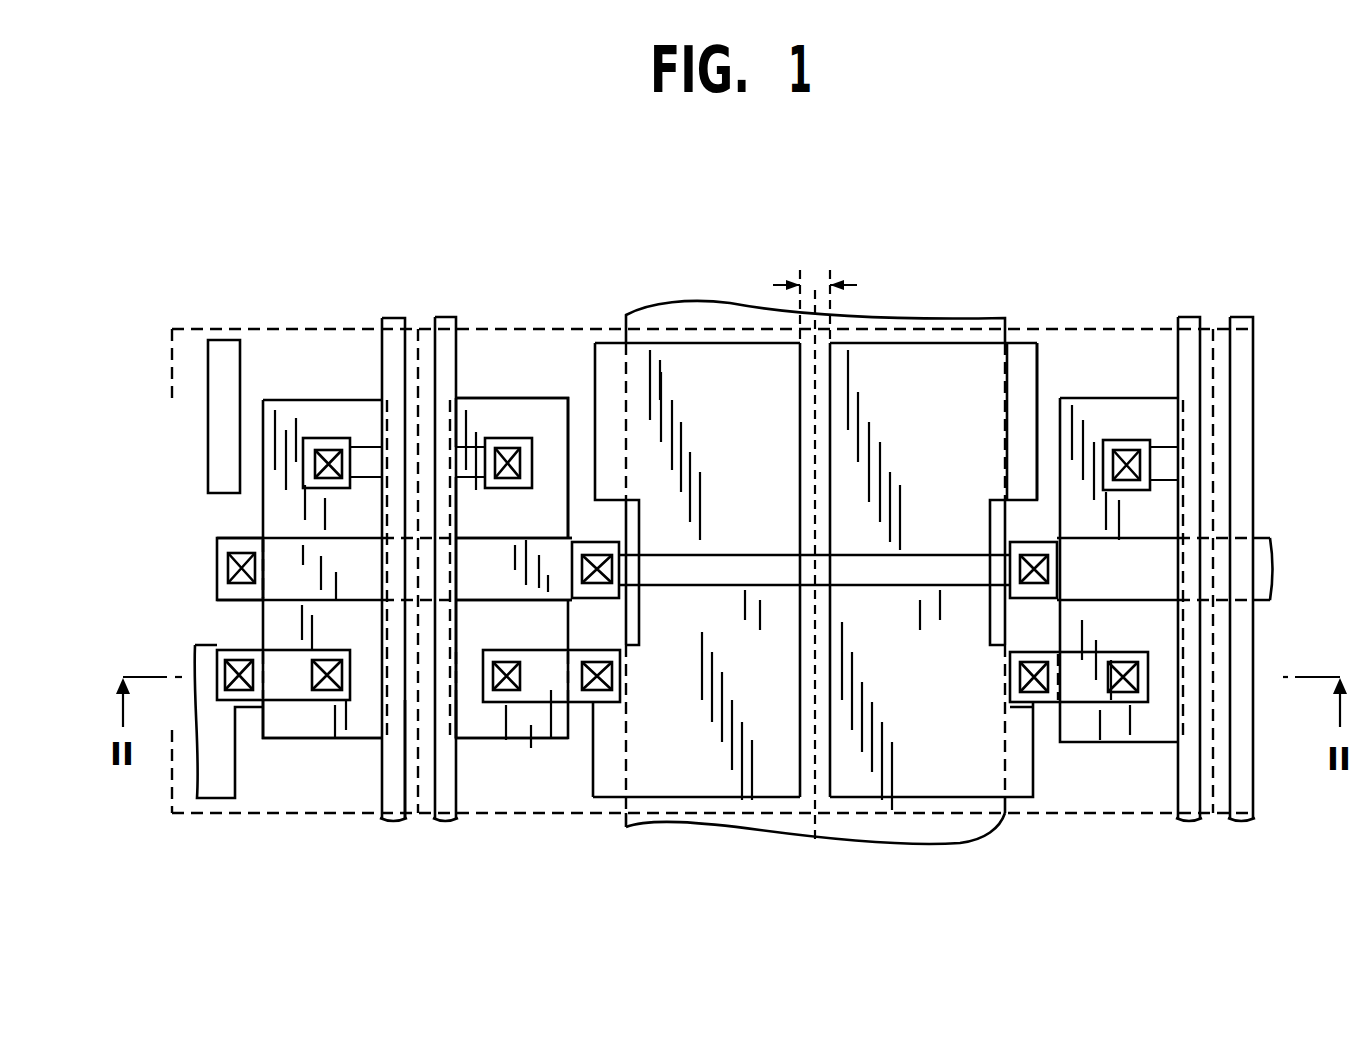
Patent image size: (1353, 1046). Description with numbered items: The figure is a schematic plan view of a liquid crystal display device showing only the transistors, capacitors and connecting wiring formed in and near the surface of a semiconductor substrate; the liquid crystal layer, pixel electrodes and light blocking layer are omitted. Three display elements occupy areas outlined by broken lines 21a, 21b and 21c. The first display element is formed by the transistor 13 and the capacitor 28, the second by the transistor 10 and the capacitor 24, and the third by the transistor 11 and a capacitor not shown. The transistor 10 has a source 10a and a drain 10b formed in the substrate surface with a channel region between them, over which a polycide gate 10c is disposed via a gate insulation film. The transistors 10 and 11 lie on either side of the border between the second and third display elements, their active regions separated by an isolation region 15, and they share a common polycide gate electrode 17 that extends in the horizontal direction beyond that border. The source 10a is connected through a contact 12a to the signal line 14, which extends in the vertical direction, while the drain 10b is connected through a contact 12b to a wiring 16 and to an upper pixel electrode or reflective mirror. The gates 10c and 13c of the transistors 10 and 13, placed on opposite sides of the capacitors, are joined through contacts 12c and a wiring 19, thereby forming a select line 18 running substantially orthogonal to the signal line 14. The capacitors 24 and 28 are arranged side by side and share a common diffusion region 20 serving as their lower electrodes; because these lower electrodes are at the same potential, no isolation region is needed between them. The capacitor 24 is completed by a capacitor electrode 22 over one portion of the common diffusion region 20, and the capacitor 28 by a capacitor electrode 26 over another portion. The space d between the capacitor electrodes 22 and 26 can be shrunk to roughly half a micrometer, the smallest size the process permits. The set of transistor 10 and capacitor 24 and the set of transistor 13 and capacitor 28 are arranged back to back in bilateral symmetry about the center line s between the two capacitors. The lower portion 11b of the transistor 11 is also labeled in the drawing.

The transistor 10 is at (485, 392).
The source 10a is at (547, 412).
The drain 10b is at (550, 702).
The gate 10c is at (487, 566).
The transistor 11 is at (295, 397).
The lower portion of pixel electrode 11b is at (308, 720).
The contact 12a is at (507, 443).
The contact 12b is at (498, 740).
The contacts 12c is at (597, 595).
The transistor 13 is at (1120, 397).
The gate 13c is at (1147, 550).
The signal line 14 is at (446, 320).
The isolation region 15 is at (410, 792).
The wiring 16 is at (570, 740).
The polycide gate electrode 17 is at (212, 590).
The select line 18 is at (231, 531).
The wiring 19 is at (663, 570).
The common diffusion region 20 is at (687, 313).
The broken line 21a is at (1105, 813).
The broken line 21b is at (718, 812).
The broken line 21c is at (245, 813).
The capacitor electrode 22 is at (608, 355).
The capacitor 24 is at (745, 383).
The capacitor electrode 26 is at (225, 353).
The capacitor 28 is at (948, 388).
The space between capacitor electrodes d is at (815, 260).
The center line s is at (815, 843).